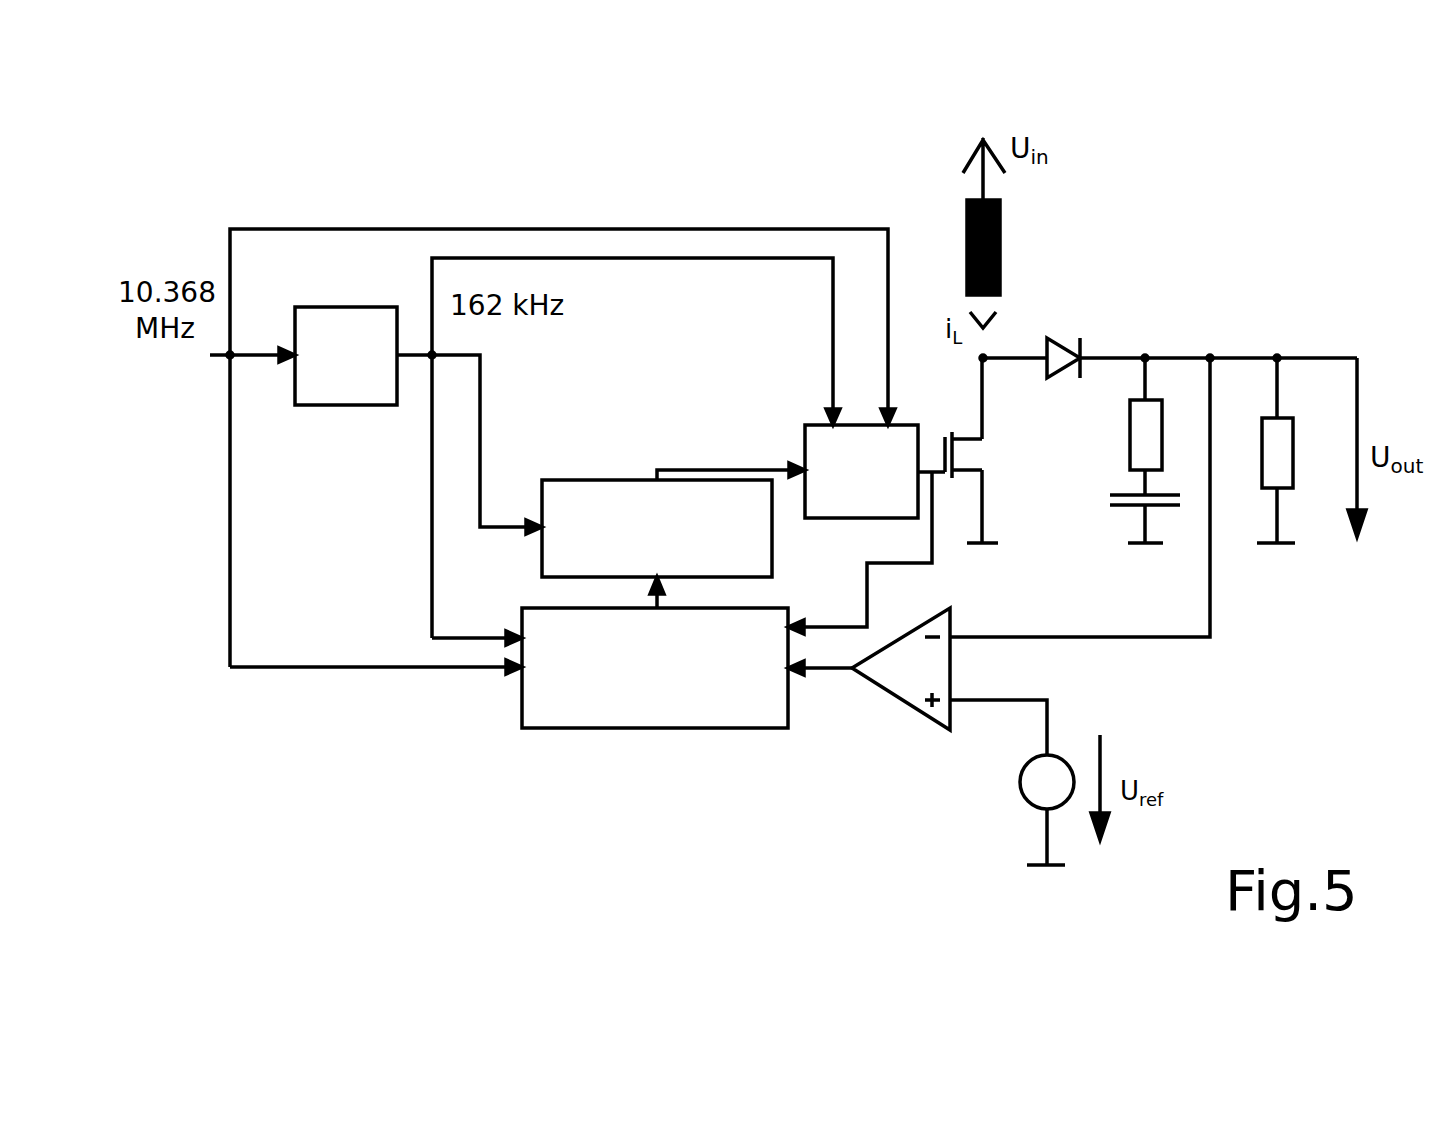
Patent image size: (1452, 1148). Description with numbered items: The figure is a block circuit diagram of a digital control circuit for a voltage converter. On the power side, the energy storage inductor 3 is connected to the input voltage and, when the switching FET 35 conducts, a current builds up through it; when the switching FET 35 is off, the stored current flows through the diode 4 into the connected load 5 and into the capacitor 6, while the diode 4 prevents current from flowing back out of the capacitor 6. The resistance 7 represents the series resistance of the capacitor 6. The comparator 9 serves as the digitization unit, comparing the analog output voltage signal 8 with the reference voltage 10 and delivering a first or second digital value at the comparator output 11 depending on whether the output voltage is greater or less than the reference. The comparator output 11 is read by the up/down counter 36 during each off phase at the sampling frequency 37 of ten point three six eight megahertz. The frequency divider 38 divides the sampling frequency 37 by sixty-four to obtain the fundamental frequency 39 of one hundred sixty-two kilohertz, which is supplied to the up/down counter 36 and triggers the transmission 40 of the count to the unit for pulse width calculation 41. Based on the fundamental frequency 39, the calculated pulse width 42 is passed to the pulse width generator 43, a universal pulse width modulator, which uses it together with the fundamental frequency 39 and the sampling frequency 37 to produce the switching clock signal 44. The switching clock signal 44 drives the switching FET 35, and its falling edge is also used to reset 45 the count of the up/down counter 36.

The energy storage inductor 3 is at (1018, 235).
The diode 4 is at (1062, 340).
The load 5 is at (1277, 455).
The capacitor 6 is at (1118, 510).
The resistance 7 is at (1139, 436).
The output voltage signal 8 is at (1100, 637).
The comparator 9 is at (908, 678).
The reference voltage 10 is at (1021, 684).
The comparator output 11 is at (838, 668).
The switching FET 35 is at (952, 455).
The up/down counter 36 is at (655, 668).
The sampling frequency 37 is at (262, 358).
The frequency divider 38 is at (338, 405).
The fundamental frequency 39 is at (480, 433).
The transmission 40 is at (665, 600).
The unit for pulse width calculation 41 is at (657, 528).
The calculated pulse width 42 is at (735, 470).
The pulse width generator 43 is at (861, 471).
The switching clock signal 44 is at (932, 437).
The reset 45 is at (867, 595).